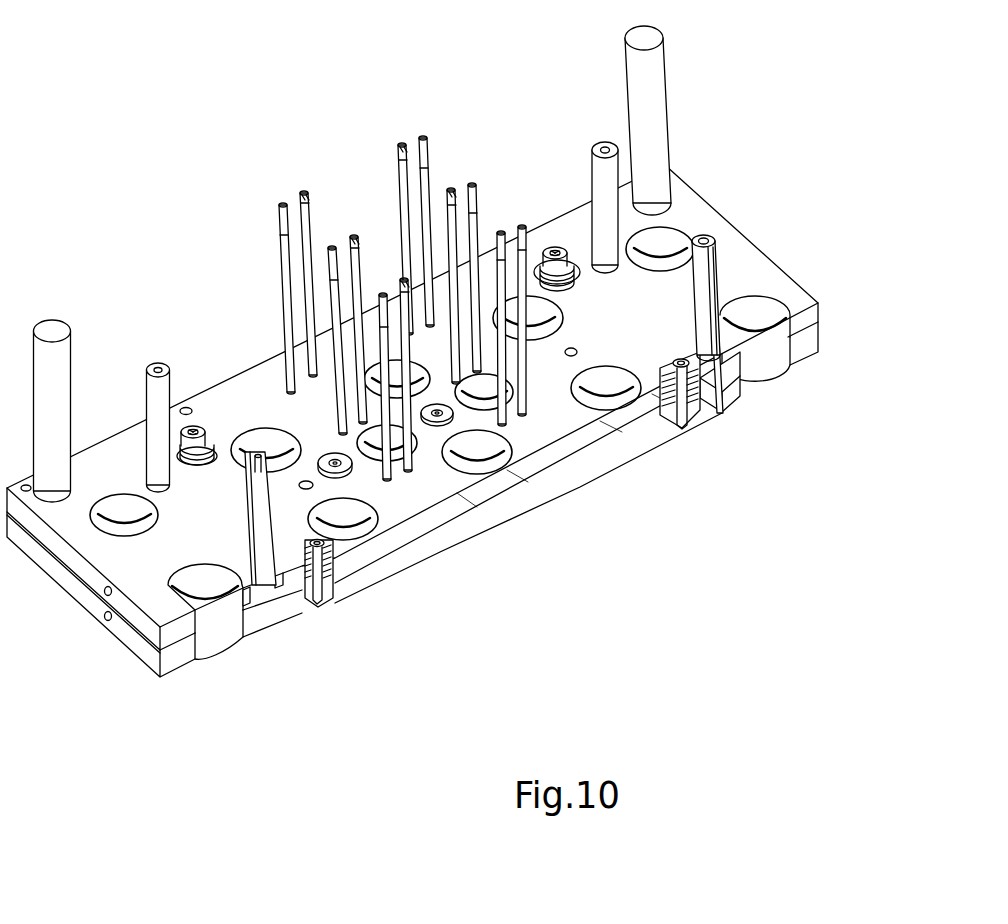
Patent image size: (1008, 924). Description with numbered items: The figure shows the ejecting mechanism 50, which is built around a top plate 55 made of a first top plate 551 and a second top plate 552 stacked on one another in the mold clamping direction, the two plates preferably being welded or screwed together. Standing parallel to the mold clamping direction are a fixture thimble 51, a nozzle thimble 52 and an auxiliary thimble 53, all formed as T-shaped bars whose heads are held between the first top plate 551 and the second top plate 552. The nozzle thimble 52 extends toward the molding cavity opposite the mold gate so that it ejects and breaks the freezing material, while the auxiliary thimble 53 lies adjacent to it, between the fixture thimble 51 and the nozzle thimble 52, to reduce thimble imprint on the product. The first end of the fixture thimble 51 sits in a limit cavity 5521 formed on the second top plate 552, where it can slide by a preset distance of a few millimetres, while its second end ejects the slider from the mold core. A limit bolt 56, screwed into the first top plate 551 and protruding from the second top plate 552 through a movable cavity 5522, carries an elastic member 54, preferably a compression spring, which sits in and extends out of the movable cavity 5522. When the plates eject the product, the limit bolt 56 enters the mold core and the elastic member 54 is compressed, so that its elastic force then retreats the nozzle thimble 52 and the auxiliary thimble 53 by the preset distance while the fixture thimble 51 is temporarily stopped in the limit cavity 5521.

The ejecting mechanism 50 is at (128, 86).
The fixture thimble 51 is at (705, 238).
The nozzle thimble 52 is at (400, 158).
The auxiliary thimble 53 is at (472, 183).
The elastic member 54 is at (208, 441).
The top plate 55 is at (466, 421).
The limit bolt 56 is at (200, 434).
The first top plate 551 is at (808, 347).
The second top plate 552 is at (810, 313).
The limit cavity 5521 is at (248, 607).
The movable cavity 5522 is at (172, 443).